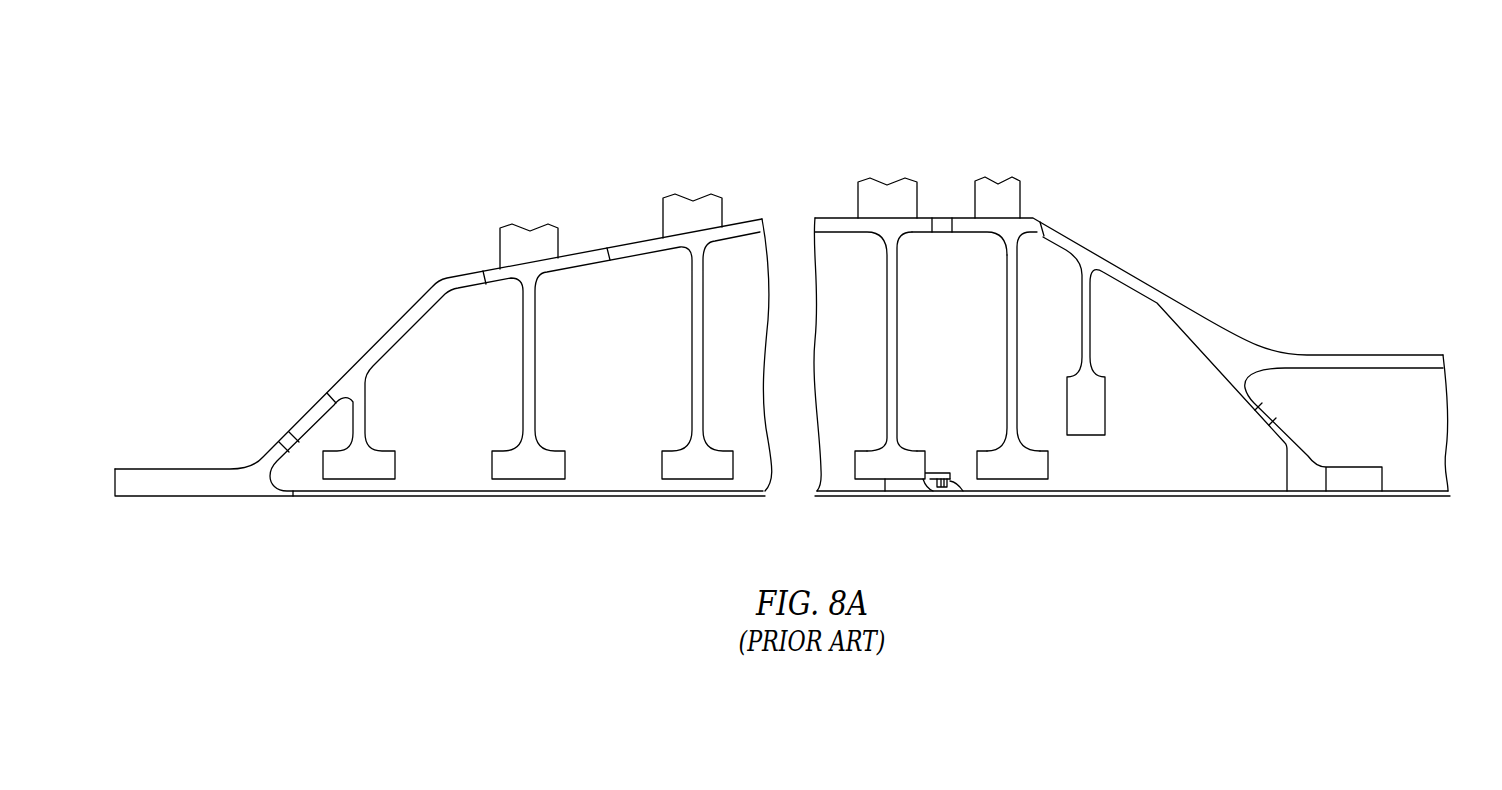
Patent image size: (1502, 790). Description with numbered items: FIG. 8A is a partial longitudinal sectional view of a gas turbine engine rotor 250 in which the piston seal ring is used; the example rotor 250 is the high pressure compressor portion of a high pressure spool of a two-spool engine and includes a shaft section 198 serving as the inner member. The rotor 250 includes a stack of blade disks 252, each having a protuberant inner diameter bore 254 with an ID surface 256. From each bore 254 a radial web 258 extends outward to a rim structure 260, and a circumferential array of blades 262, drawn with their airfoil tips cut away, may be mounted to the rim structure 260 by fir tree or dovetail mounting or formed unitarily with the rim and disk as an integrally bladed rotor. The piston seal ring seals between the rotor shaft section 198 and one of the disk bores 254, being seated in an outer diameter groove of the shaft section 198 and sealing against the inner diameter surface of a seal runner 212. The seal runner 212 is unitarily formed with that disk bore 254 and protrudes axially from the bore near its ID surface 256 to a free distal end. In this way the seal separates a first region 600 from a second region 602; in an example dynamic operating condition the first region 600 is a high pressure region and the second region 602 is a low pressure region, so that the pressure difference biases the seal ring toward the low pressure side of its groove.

The shaft section 198 is at (980, 506).
The seal runner 212 is at (940, 462).
The gas turbine engine rotor 250 is at (1147, 204).
The blade disk 252 is at (908, 327).
The inner diameter bore 254 is at (887, 462).
The ID surface 256 is at (885, 483).
The radial web 258 is at (892, 372).
The rim structure 260 is at (925, 225).
The blades 262 is at (886, 170).
The first region 600 is at (986, 344).
The second region 602 is at (831, 417).